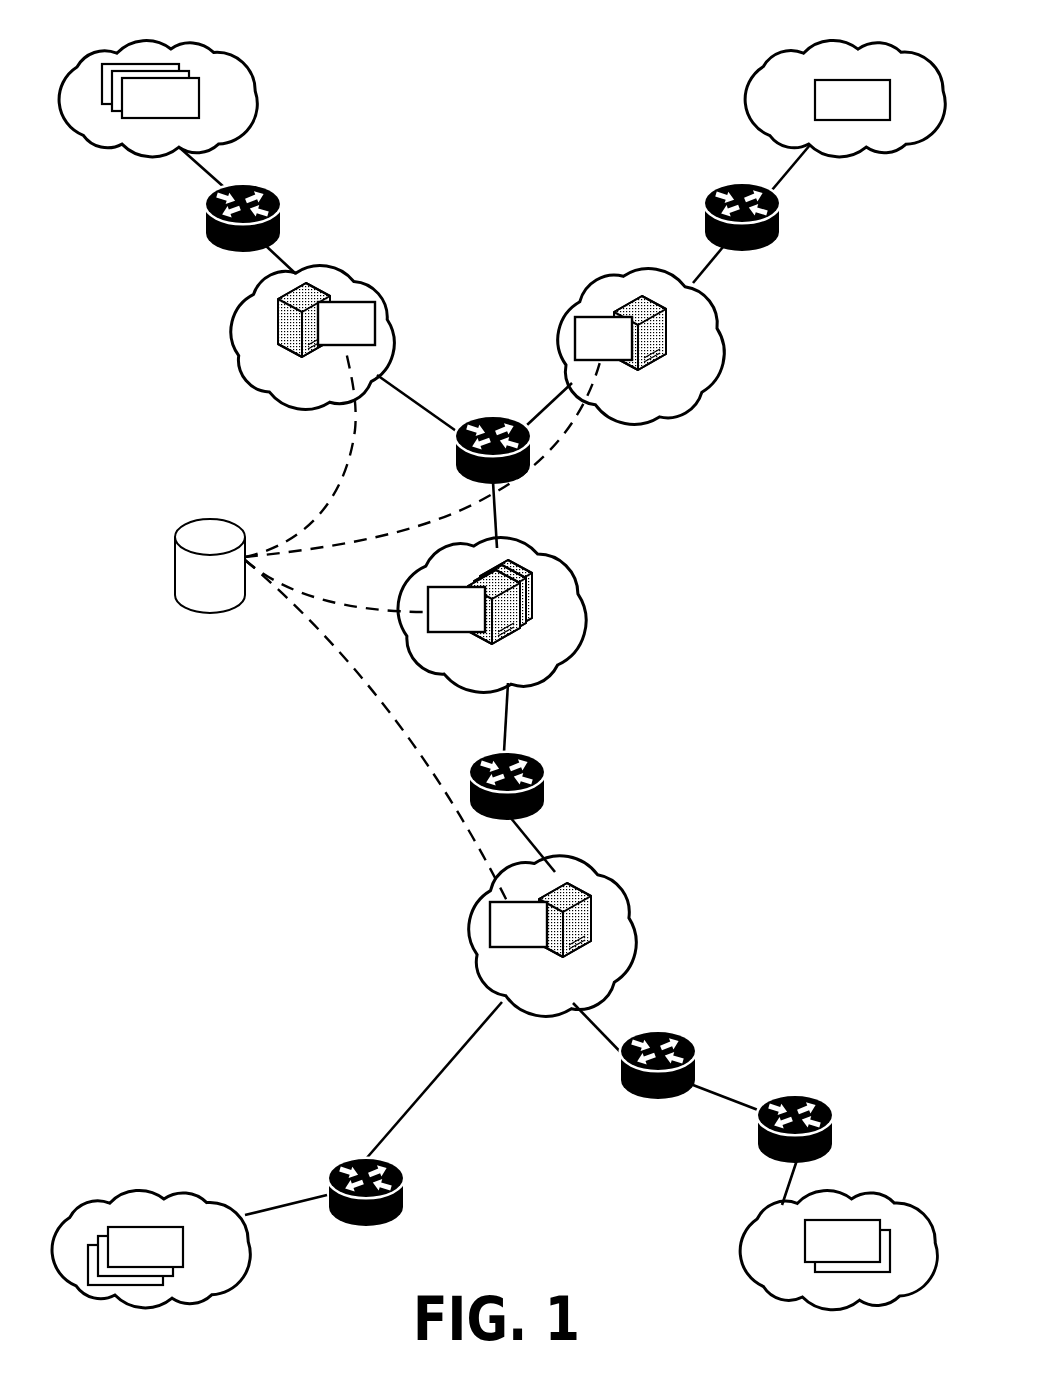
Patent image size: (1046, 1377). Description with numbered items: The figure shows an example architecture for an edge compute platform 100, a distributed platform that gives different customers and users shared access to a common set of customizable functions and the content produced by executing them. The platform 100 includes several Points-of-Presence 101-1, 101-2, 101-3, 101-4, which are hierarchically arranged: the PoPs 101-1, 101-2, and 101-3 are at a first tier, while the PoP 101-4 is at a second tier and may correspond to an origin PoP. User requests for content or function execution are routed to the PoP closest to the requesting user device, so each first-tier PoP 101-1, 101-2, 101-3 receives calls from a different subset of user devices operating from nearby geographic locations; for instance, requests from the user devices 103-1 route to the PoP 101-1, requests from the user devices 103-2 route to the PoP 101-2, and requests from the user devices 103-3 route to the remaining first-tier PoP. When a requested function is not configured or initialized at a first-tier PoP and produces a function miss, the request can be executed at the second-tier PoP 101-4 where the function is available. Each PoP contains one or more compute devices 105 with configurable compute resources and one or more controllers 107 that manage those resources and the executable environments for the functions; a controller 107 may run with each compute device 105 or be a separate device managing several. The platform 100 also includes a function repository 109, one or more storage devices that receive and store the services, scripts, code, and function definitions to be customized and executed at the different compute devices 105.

The edge compute platform 100 is at (541, 44).
The Point-of-Presence 101-1 is at (235, 333).
The Point-of-Presence 101-2 is at (620, 270).
The Point-of-Presence 101-3 is at (477, 932).
The Point-of-Presence 101-4 is at (578, 603).
The user devices 103-1 is at (136, 108).
The user devices 103-2 is at (828, 110).
The user devices 103-3 is at (121, 1257).
The compute device 105 is at (298, 389).
The controller 107 is at (332, 333).
The function repository 109 is at (195, 520).